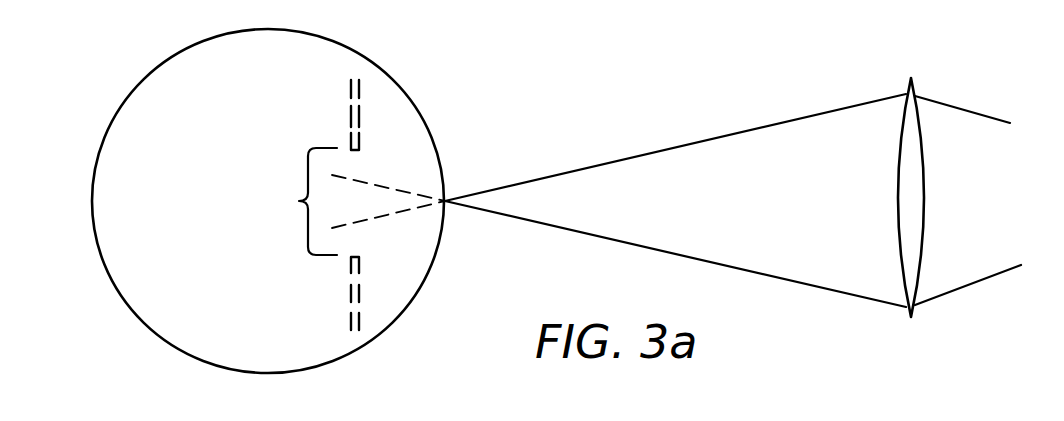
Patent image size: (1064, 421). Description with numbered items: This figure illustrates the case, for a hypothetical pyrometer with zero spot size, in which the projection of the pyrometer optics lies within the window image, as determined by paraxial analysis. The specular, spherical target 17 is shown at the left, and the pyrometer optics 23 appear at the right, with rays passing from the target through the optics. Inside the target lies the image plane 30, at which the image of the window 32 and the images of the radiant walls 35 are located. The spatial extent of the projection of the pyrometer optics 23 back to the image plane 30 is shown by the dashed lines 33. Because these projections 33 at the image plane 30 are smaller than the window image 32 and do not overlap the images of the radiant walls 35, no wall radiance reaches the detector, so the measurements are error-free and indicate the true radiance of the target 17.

The target 17 is at (437, 139).
The pyrometer optics 23 is at (908, 93).
The image plane 30 is at (344, 129).
The window image 32 is at (297, 201).
The projection of the pyrometer optics 33 is at (383, 186).
The image of the radiant walls 35 is at (360, 112).